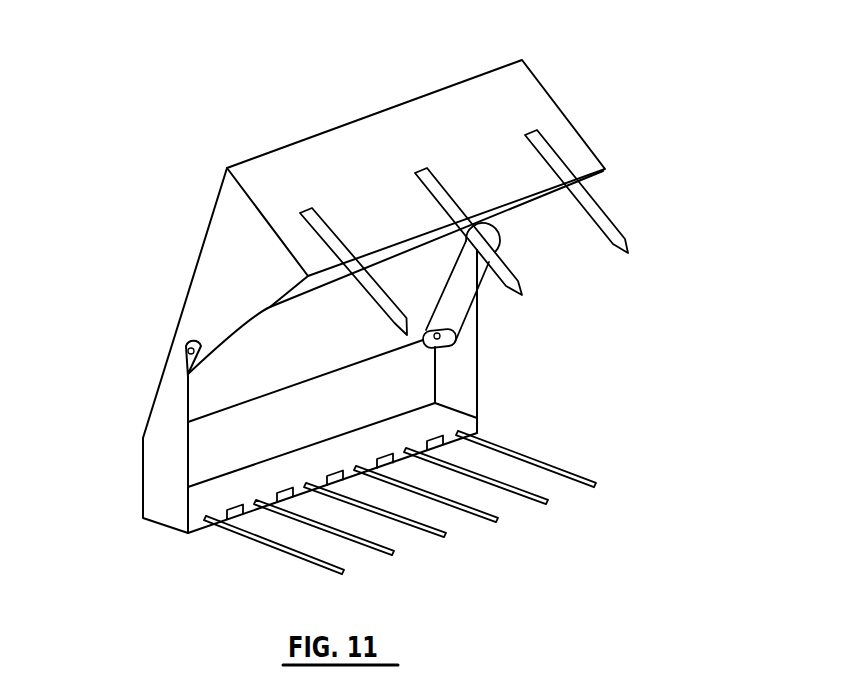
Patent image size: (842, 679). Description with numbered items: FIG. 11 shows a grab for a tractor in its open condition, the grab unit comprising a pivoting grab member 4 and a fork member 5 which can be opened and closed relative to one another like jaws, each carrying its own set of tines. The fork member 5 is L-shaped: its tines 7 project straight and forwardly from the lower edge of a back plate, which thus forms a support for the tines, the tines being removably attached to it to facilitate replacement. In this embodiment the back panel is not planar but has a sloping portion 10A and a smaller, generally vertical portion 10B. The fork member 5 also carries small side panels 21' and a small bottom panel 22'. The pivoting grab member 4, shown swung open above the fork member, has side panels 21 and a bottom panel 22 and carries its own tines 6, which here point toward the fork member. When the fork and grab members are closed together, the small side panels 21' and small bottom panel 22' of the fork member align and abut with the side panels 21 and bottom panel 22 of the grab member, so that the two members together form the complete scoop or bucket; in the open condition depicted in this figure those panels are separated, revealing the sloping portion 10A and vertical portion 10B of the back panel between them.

The bottom panel 22 is at (416, 166).
The small bottom panel 22' is at (255, 545).
The side panels 21 is at (343, 303).
The small side panels 21' is at (306, 391).
The sloping portion 10A is at (334, 346).
The vertical portion 10B is at (336, 425).
The tines 6 is at (615, 231).
The tines 7 is at (380, 549).
The grab member 4 is at (597, 293).
The fork member 5 is at (540, 407).